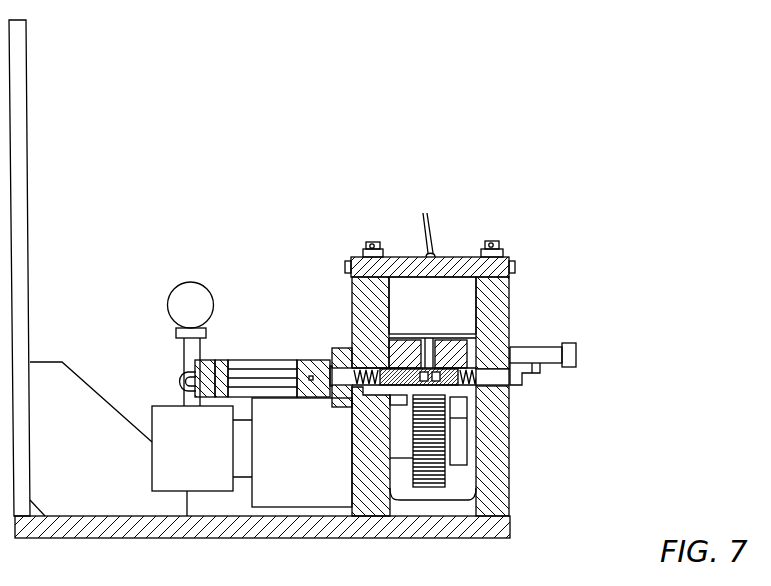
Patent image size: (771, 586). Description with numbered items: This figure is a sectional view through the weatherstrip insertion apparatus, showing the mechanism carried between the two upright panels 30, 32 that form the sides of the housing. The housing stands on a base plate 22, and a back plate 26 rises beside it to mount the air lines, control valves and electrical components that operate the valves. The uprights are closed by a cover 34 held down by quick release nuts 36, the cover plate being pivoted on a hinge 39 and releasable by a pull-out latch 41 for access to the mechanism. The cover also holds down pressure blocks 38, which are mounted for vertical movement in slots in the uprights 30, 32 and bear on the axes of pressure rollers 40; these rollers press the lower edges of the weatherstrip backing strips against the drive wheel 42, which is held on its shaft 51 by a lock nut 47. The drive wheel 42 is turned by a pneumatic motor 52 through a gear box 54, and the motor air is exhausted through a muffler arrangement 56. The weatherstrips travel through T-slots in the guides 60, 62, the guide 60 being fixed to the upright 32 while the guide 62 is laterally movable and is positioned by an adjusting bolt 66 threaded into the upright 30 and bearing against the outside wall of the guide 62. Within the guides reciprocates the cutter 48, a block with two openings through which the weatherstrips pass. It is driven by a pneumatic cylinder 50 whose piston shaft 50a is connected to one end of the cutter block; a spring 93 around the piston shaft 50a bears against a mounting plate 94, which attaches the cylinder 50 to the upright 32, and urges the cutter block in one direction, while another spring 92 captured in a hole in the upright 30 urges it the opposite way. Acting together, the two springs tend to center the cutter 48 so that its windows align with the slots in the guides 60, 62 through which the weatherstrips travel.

The base plate 22 is at (256, 530).
The back plate 26 is at (26, 103).
The upright panel 30 is at (505, 405).
The upright panel 32 is at (357, 290).
The cover 34 is at (393, 258).
The quick release nuts 36 is at (371, 243).
The pressure blocks 38 is at (452, 287).
The hinge 39 is at (347, 264).
The pressure rollers 40 is at (498, 305).
The pull-out latch 41 is at (431, 250).
The drive wheel 42 is at (436, 484).
The lock nut 47 is at (462, 452).
The cutter 48 is at (422, 345).
The pneumatic cylinder 50 is at (243, 360).
The piston shaft 50a is at (276, 372).
The shaft 51 is at (396, 444).
The pneumatic motor 52 is at (202, 461).
The gear box 54 is at (302, 452).
The muffler arrangement 56 is at (190, 288).
The guide 60 is at (410, 338).
The guide 62 is at (470, 340).
The adjusting bolt 66 is at (580, 362).
The spring 92 is at (480, 365).
The spring 93 is at (328, 356).
The mounting plate 94 is at (343, 346).